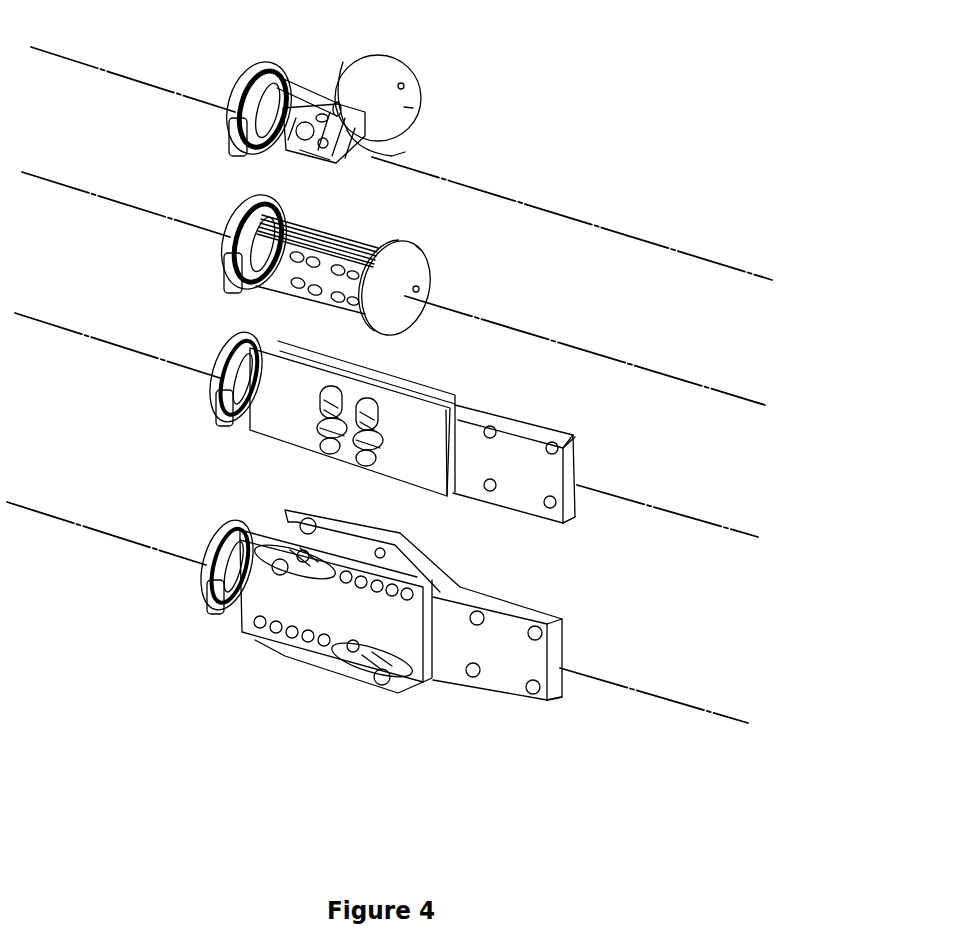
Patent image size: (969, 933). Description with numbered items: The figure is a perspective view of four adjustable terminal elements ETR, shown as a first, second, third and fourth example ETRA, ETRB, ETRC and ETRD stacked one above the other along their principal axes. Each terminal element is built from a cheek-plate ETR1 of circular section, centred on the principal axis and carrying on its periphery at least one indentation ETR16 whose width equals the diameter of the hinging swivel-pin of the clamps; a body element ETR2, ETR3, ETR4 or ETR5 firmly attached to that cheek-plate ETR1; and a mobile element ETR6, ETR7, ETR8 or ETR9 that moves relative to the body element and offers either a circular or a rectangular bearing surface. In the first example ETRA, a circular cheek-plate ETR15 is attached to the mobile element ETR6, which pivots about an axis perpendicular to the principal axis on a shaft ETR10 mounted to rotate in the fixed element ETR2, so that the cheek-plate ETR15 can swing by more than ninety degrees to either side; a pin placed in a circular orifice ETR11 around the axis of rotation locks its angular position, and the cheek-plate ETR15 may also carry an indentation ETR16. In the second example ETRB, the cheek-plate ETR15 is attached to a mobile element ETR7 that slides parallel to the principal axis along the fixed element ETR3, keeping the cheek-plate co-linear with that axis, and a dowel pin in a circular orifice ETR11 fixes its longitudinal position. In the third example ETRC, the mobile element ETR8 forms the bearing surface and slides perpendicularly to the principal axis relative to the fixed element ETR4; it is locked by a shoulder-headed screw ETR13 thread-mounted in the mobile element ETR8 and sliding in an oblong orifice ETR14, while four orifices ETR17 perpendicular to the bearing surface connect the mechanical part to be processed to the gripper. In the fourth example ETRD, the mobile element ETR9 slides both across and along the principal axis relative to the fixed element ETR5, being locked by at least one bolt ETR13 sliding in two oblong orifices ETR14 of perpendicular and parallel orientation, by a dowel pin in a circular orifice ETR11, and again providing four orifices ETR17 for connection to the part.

The adjustable terminal element ETR is at (115, 321).
The first adjustable terminal element ETRA is at (518, 137).
The second adjustable terminal element ETRB is at (518, 288).
The third adjustable terminal element ETRC is at (640, 490).
The fourth adjustable terminal element ETRD is at (637, 683).
The cheek-plate ETR1 is at (247, 78).
The body element ETR2 is at (308, 78).
The body element ETR3 is at (290, 222).
The body element ETR4 is at (280, 348).
The body element ETR5 is at (274, 518).
The mobile element ETR6 is at (353, 65).
The mobile element ETR7 is at (375, 243).
The mobile element ETR8 is at (483, 408).
The mobile element ETR9 is at (483, 600).
The shaft ETR10 is at (398, 168).
The circular orifice ETR11 is at (300, 143).
The shoulder-headed screw ETR13 is at (318, 432).
The oblong orifice ETR14 is at (373, 465).
The cheek-plate ETR15 is at (410, 108).
The indentation ETR16 is at (229, 120).
The orifice ETR17 is at (574, 460).